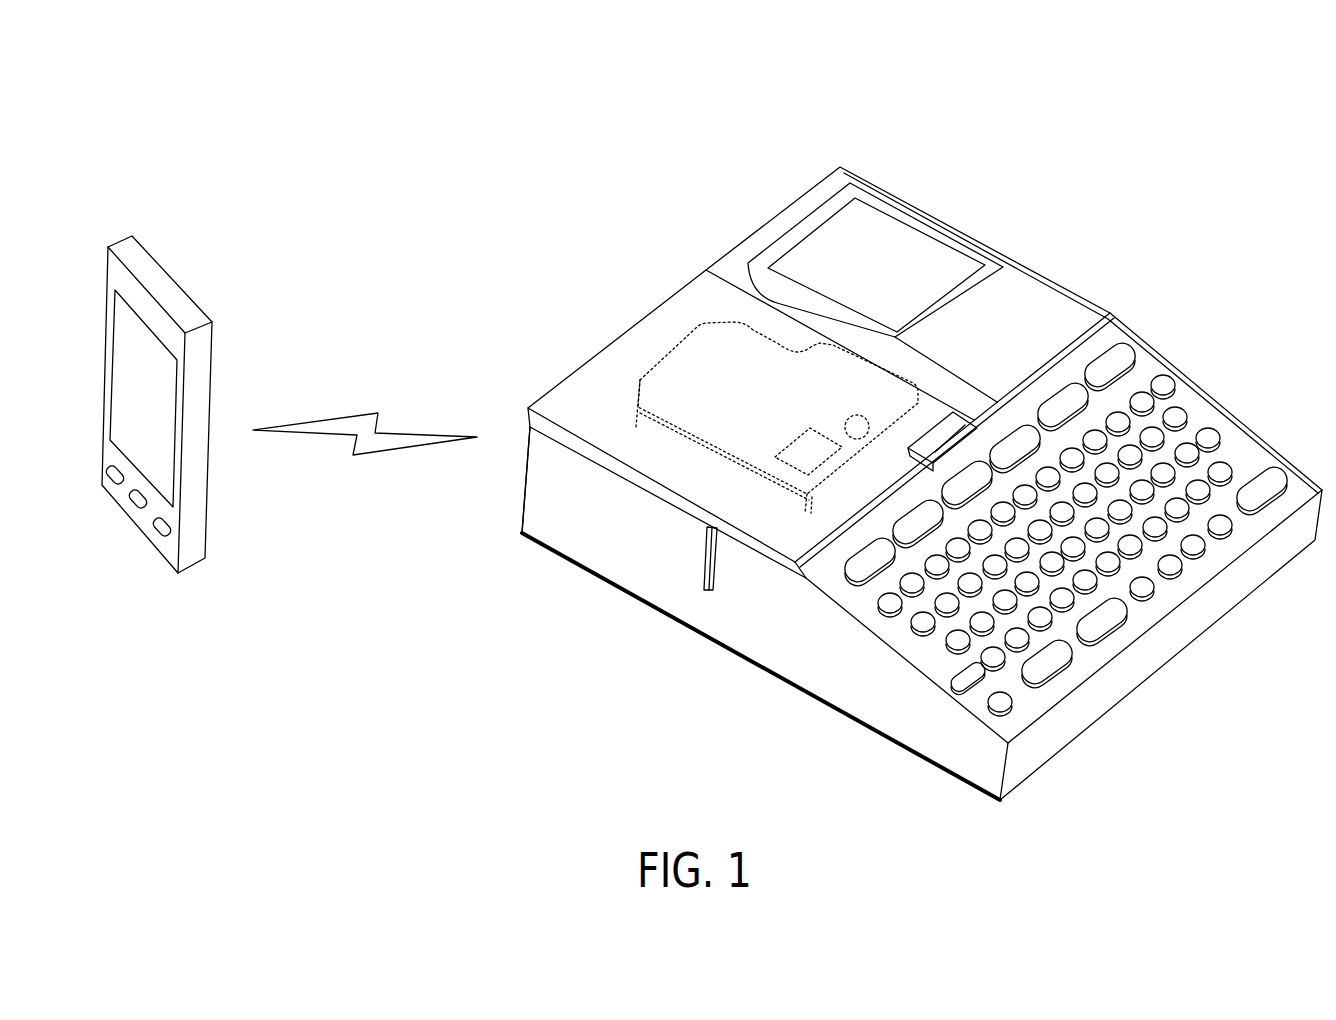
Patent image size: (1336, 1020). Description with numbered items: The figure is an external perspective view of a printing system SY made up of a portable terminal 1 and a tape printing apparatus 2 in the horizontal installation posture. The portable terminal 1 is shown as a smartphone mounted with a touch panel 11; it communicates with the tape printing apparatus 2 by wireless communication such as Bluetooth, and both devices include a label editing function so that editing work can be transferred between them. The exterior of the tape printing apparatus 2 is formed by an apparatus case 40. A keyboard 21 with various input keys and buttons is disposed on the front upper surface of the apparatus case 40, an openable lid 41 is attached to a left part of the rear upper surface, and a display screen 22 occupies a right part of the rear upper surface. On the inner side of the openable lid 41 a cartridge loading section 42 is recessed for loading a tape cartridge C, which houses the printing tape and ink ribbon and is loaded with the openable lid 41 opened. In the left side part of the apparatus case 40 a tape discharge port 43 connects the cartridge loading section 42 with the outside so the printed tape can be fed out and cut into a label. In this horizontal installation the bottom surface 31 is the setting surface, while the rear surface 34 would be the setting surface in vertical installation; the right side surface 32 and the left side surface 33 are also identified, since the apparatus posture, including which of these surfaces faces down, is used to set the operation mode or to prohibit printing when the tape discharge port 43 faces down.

The printing system SY is at (644, 81).
The portable terminal 1 is at (202, 251).
The touch panel 11 is at (122, 362).
The tape printing apparatus 2 is at (1094, 222).
The keyboard 21 is at (1197, 417).
The display screen 22 is at (872, 223).
The bottom surface 31 is at (953, 777).
The right side surface 32 is at (940, 213).
The left side surface 33 is at (572, 523).
The rear surface 34 is at (740, 240).
The apparatus case 40 is at (840, 713).
The openable lid 41 is at (618, 347).
The cartridge loading section 42 is at (678, 478).
The tape discharge port 43 is at (705, 575).
The tape cartridge C is at (687, 332).